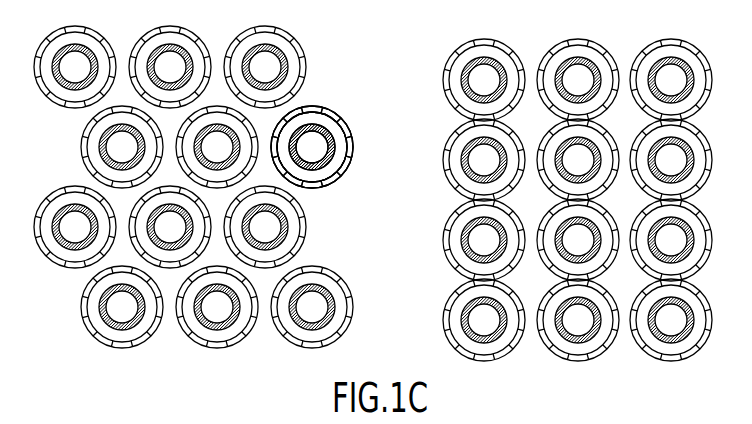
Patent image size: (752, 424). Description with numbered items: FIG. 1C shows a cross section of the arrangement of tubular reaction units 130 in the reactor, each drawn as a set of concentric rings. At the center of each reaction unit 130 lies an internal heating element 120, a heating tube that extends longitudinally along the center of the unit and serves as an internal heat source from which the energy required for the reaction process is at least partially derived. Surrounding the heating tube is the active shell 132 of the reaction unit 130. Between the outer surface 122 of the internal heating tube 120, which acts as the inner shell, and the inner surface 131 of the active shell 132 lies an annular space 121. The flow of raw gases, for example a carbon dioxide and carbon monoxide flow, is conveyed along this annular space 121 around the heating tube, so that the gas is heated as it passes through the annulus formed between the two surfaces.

The heating element 120 is at (307, 158).
The space 121 is at (327, 171).
The outer surface 122 is at (337, 143).
The reaction unit 130 is at (342, 120).
The inner surface 131 is at (348, 168).
The active shell 132 is at (346, 111).